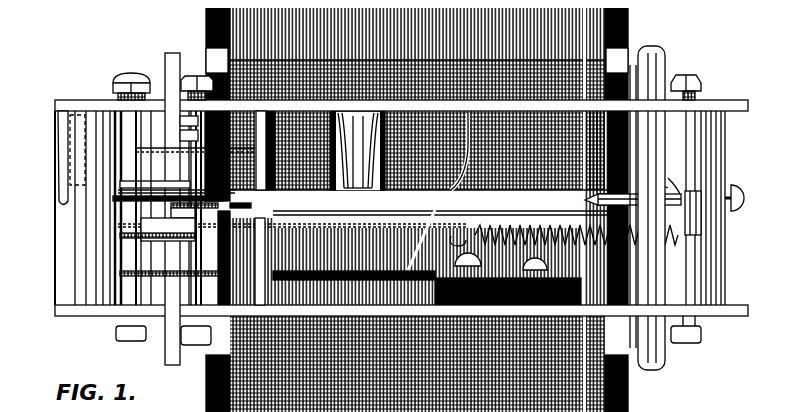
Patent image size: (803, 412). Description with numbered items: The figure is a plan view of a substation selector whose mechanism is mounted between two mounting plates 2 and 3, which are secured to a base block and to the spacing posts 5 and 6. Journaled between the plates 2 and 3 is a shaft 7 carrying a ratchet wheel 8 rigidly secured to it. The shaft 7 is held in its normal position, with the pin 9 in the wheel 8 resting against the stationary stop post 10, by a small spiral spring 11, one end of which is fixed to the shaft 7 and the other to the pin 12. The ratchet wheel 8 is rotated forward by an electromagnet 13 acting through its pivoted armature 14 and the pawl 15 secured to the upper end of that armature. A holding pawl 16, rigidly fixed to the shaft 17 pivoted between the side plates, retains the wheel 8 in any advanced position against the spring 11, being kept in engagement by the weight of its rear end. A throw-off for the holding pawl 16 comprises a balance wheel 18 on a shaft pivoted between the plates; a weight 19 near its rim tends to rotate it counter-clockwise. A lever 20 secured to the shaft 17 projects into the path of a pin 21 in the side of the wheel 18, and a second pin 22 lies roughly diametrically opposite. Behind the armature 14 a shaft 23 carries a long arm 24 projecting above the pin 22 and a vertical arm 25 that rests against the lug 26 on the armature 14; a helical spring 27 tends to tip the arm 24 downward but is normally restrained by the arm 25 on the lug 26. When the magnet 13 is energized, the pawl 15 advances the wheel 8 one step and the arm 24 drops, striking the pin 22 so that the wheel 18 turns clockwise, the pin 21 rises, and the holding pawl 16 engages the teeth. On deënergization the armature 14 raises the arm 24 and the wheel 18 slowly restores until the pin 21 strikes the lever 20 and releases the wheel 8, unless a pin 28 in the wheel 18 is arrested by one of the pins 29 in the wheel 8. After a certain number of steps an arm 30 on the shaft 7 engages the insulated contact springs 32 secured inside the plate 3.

The mounting plate 2 is at (698, 101).
The mounting plate 3 is at (708, 303).
The spacing post 5 is at (70, 262).
The spacing post 6 is at (717, 131).
The shaft 7 is at (185, 285).
The ratchet wheel 8 is at (137, 202).
The pin 9 is at (182, 178).
The stationary stop post 10 is at (128, 140).
The spiral spring 11 is at (115, 133).
The pin 12 is at (375, 400).
The electromagnet 13 is at (620, 14).
The pivoted armature 14 is at (650, 60).
The pawl 15 is at (640, 184).
The holding pawl 16 is at (102, 103).
The shaft 17 is at (97, 297).
The balance wheel 18 is at (303, 209).
The weight 19 is at (183, 232).
The lever 20 is at (178, 175).
The pin 21 is at (251, 261).
The pin 22 is at (373, 208).
The shaft 23 is at (677, 161).
The long arm 24 is at (460, 217).
The vertical arm 25 is at (705, 206).
The lug 26 is at (665, 172).
The helical spring 27 is at (577, 192).
The pin 28 is at (248, 177).
The pins 29 is at (140, 210).
The arm 30 is at (170, 286).
The electrical contacts 32 is at (400, 262).